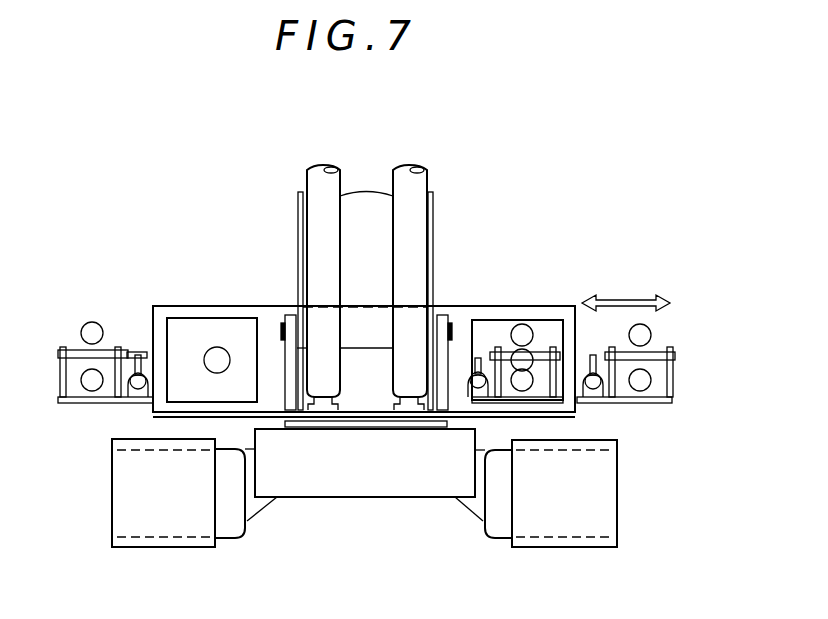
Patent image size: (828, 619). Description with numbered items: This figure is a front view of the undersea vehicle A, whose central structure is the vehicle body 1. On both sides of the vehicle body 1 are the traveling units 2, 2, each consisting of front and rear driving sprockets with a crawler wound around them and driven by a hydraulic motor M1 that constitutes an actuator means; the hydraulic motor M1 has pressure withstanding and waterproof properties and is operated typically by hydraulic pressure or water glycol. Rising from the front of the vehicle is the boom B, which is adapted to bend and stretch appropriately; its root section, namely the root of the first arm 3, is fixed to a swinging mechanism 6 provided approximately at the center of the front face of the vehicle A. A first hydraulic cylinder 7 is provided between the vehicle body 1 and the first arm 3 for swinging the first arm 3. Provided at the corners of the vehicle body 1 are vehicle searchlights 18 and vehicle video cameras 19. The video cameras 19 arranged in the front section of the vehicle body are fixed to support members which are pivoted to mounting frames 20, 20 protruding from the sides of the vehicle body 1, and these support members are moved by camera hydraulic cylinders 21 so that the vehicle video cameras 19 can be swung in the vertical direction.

The vehicle body 1 is at (505, 306).
The traveling unit 2 is at (110, 490).
The first arm 3 is at (377, 192).
The swinging mechanism 6 is at (455, 425).
The first hydraulic cylinder 7 is at (428, 178).
The vehicle searchlight 18 is at (204, 363).
The vehicle video camera 19 is at (650, 333).
The mounting frame 20 is at (683, 409).
The camera hydraulic cylinder 21 is at (609, 404).
The undersea vehicle A is at (247, 303).
The boom B is at (297, 205).
The hydraulic motor M1 is at (252, 539).